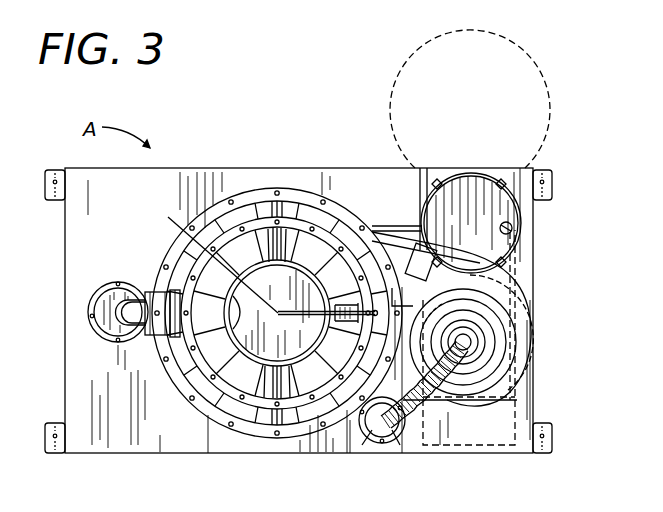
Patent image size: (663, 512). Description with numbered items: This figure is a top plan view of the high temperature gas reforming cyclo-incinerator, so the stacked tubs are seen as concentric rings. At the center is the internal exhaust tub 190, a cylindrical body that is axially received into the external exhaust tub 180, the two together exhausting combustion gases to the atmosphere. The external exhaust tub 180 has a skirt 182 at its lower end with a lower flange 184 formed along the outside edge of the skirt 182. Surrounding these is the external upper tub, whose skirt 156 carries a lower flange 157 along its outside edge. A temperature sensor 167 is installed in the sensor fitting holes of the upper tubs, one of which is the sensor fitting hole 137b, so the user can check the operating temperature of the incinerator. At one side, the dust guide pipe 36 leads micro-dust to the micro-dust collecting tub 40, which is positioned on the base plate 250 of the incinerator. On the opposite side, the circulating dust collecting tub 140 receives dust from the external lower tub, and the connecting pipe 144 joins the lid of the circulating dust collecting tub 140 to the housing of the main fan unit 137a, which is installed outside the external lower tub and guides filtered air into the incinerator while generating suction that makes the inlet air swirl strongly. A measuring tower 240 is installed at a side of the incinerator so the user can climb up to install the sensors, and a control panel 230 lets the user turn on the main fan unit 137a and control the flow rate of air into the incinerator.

The micro-dust collecting tub 40 is at (90, 295).
The dust guide pipe 36 is at (150, 337).
The temperature sensor 167 is at (213, 253).
The internal exhaust tub 190 is at (163, 250).
The lower flange 184 is at (227, 337).
The skirt 156 is at (207, 380).
The lower flange 157 is at (207, 410).
The base plate 250 is at (98, 447).
The skirt 182 is at (252, 393).
The external exhaust tub 180 is at (292, 370).
The circulating dust collecting tub 140 is at (396, 442).
The connecting pipe 144 is at (420, 408).
The main fan unit 137a is at (526, 376).
The sensor fitting hole 137b is at (402, 240).
The measuring tower 240 is at (513, 282).
The control panel 230 is at (518, 445).